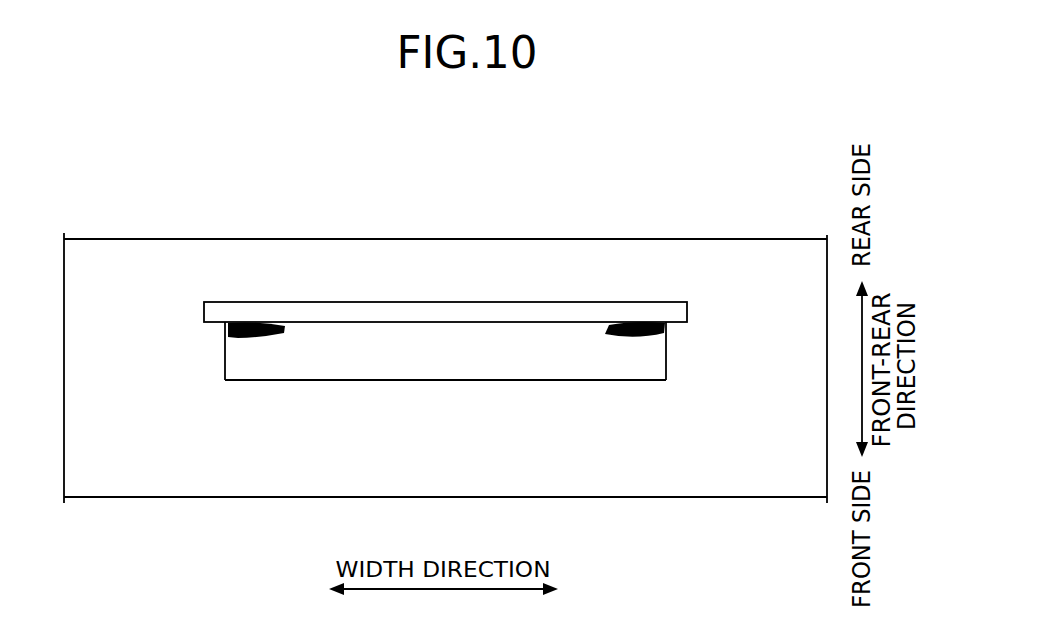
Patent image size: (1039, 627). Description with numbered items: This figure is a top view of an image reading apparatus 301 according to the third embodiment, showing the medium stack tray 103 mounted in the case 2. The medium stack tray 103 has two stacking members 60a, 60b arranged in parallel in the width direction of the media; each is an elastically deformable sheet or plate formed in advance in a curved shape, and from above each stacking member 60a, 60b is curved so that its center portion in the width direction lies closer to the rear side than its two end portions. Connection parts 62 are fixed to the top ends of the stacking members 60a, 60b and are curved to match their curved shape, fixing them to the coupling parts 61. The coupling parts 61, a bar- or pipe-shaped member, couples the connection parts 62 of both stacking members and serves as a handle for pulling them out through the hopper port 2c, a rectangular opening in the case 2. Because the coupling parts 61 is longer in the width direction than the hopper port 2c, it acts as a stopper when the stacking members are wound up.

The image reading apparatus 301 is at (67, 190).
The case 2 is at (163, 239).
The hopper port 2c is at (329, 380).
The medium stack tray 103 is at (427, 190).
The coupling parts 61 is at (462, 302).
The connection parts 62 is at (256, 323).
The stacking member 60a is at (240, 338).
The stacking member 60b is at (634, 338).